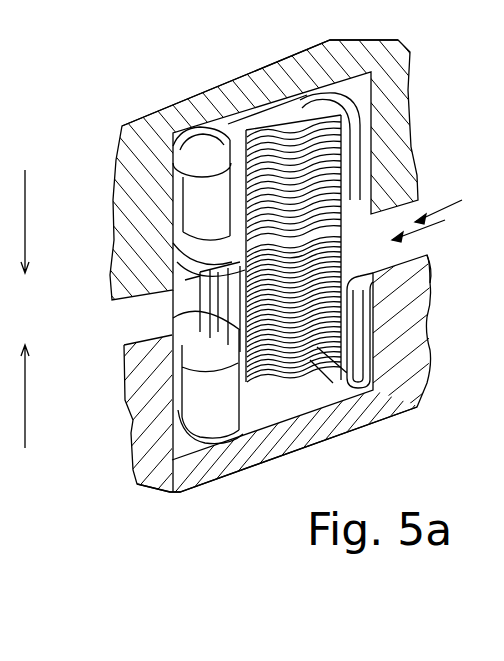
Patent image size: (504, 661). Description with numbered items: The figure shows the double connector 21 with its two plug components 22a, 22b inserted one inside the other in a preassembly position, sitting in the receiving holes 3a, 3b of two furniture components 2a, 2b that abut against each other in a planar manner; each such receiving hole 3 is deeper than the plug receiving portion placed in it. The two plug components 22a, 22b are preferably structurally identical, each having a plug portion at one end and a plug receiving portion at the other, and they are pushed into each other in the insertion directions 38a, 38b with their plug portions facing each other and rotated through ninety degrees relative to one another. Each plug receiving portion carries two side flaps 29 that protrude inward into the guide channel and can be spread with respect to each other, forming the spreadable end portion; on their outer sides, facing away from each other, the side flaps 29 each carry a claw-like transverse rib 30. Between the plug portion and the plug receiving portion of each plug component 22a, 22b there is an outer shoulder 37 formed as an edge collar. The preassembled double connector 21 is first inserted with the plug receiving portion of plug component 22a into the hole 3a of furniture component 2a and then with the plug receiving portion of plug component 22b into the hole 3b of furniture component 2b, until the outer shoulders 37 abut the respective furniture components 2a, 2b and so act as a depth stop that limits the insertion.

The furniture component 2a is at (273, 90).
The furniture component 2b is at (345, 437).
The receiving hole 3 is at (465, 336).
The receiving hole 3a is at (210, 95).
The receiving hole 3b is at (276, 418).
The double connector 21 is at (436, 209).
The plug component 22a is at (165, 172).
The plug component 22b is at (172, 388).
The side flap 29 is at (200, 207).
The claw-like transverse rib 30 is at (187, 137).
The outer shoulder 37 is at (178, 293).
The insertion direction 38a is at (30, 222).
The insertion direction 38b is at (28, 387).